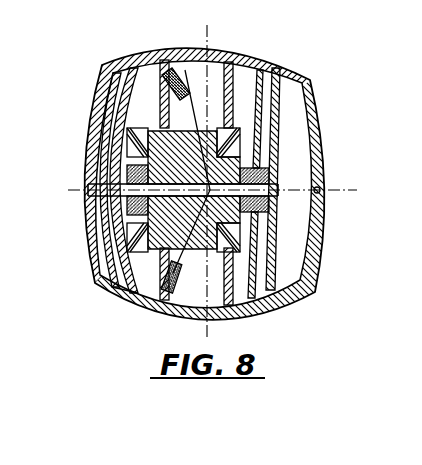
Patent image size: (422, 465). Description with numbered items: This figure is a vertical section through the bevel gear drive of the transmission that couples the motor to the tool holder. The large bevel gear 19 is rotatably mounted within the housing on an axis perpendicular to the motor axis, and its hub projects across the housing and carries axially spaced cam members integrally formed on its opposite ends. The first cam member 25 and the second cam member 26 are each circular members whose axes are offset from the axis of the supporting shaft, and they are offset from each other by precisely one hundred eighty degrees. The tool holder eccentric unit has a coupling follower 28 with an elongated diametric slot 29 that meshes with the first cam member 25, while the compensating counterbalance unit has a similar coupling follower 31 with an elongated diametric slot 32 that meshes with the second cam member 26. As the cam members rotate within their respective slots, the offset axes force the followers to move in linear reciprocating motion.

The large bevel gear 19 is at (186, 70).
The first cam member 25 is at (257, 234).
The second cam member 26 is at (86, 226).
The coupling follower 28 is at (250, 62).
The elongated diametric slot 29 is at (257, 155).
The coupling follower 31 is at (127, 68).
The elongated diametric slot 32 is at (86, 156).